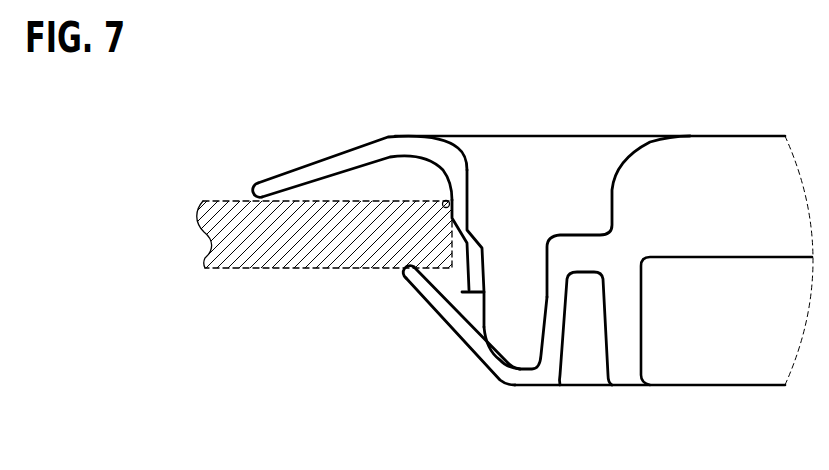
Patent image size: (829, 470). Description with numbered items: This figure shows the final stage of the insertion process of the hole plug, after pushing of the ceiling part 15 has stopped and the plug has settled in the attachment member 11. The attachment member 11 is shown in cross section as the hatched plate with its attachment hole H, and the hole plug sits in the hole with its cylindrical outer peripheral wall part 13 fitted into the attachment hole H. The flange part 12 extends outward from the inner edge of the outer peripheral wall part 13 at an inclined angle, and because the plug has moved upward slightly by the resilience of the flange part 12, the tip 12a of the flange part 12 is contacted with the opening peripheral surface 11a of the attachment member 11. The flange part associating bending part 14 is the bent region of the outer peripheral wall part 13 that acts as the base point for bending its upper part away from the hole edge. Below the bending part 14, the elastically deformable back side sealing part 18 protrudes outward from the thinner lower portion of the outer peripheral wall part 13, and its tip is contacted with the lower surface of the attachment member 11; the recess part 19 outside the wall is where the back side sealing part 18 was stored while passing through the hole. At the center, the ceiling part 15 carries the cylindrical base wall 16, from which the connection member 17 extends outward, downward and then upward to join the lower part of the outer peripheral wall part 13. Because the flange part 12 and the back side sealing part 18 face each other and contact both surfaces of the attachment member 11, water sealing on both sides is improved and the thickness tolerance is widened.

The attachment member 11 is at (257, 256).
The opening peripheral surface 11a is at (222, 200).
The flange part 12 is at (346, 160).
The tip 12a is at (251, 196).
The outer peripheral wall part 13 is at (468, 222).
The flange part associating bending part 14 is at (457, 233).
The ceiling part 15 is at (713, 137).
The base wall 16 is at (625, 371).
The connection member 17 is at (542, 375).
The back side sealing part 18 is at (413, 281).
The recess part 19 is at (484, 292).
The attachment hole H is at (460, 295).